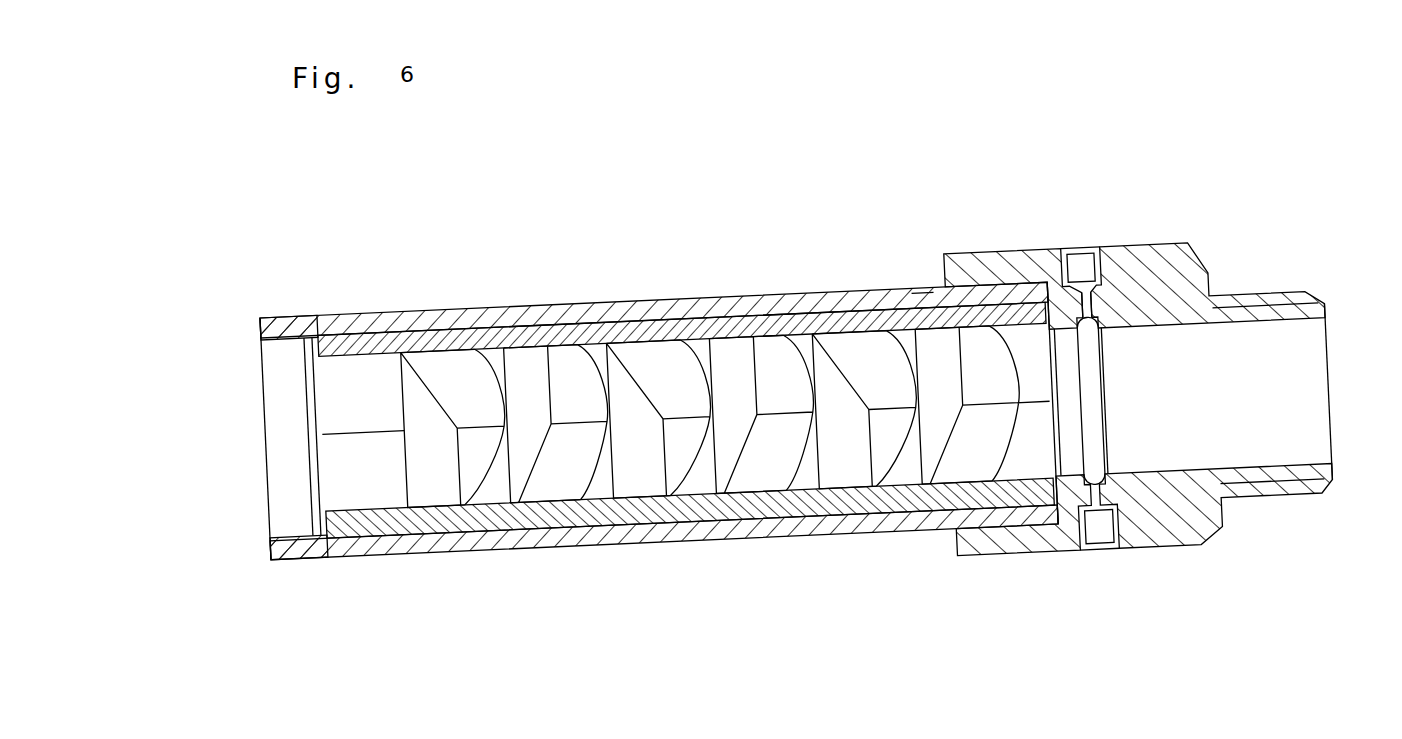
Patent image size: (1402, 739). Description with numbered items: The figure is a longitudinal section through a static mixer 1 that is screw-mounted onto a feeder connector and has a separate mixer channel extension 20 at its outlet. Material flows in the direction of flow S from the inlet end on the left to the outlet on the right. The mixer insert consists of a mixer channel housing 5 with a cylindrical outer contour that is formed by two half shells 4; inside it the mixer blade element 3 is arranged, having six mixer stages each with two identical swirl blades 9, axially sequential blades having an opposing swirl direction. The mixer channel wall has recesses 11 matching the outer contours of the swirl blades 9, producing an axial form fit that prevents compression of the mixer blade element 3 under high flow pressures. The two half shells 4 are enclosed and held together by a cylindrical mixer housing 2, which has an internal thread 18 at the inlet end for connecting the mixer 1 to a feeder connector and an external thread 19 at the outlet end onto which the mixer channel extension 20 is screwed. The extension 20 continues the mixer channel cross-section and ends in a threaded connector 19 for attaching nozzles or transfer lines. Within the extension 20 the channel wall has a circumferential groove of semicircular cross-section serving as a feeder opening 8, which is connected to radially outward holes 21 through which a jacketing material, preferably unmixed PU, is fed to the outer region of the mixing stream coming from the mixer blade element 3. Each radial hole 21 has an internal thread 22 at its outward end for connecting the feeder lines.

The static mixer 1 is at (680, 262).
The mixer housing 2 is at (457, 322).
The mixer blade element 3 is at (567, 458).
The half shells 4 is at (338, 403).
The mixer channel housing 5 is at (565, 340).
The feeder opening 8 is at (1087, 403).
The swirl blades 9 is at (433, 408).
The recesses 11 is at (648, 348).
The internal thread 18 is at (282, 337).
The external thread / threaded connector 19 is at (925, 285).
The mixer channel extension 20 is at (1153, 261).
The holes 21 is at (1093, 307).
The internal thread 22 is at (1098, 535).
The direction of flow S is at (230, 433).